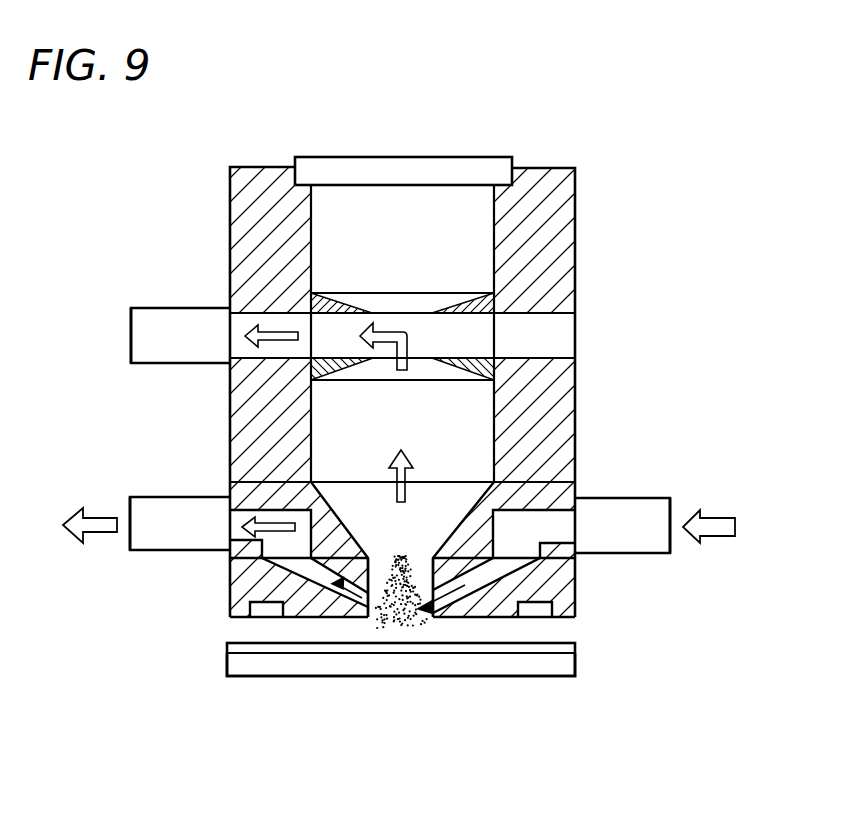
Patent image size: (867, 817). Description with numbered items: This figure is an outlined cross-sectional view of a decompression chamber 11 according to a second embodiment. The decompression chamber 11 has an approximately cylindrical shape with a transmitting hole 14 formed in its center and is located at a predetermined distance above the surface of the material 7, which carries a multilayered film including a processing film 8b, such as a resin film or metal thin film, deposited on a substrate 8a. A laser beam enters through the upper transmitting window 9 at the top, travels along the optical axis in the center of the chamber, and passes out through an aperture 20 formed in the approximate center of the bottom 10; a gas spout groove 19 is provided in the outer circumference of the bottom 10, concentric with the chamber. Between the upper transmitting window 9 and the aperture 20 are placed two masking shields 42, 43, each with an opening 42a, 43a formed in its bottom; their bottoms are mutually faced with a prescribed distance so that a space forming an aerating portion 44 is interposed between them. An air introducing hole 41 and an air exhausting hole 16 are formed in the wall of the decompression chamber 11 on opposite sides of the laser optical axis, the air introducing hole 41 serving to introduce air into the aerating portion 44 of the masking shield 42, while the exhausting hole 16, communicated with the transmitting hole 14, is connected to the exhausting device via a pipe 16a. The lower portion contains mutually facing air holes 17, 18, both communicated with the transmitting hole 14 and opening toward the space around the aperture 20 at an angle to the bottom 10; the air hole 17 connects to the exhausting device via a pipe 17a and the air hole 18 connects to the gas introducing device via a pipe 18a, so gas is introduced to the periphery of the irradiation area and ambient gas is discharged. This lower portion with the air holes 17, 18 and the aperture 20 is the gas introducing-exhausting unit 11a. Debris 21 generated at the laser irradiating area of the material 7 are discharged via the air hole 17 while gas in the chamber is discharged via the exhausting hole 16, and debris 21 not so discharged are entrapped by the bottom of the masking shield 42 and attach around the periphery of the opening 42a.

The material 7 is at (650, 635).
The substrate 8a is at (562, 667).
The processing film 8b is at (562, 649).
The upper transmitting window 9 is at (456, 168).
The bottom 10 is at (300, 619).
The decompression chamber 11 is at (543, 270).
The gas introducing-exhausting unit 11a is at (742, 500).
The transmitting hole 14 is at (462, 212).
The exhausting hole 16 is at (240, 347).
The pipe 16a is at (148, 308).
The air hole 17 is at (240, 533).
The pipe 17a is at (148, 497).
The air hole 18 is at (563, 518).
The pipe 18a is at (593, 497).
The gas spout groove 19 is at (255, 606).
The aperture 20 is at (412, 605).
The debris 21 is at (388, 603).
The air introducing hole 41 is at (543, 333).
The masking shield 42 is at (322, 369).
The opening 42a is at (440, 378).
The masking shield 43 is at (323, 293).
The opening 43a is at (413, 313).
The aerating portion 44 is at (330, 330).